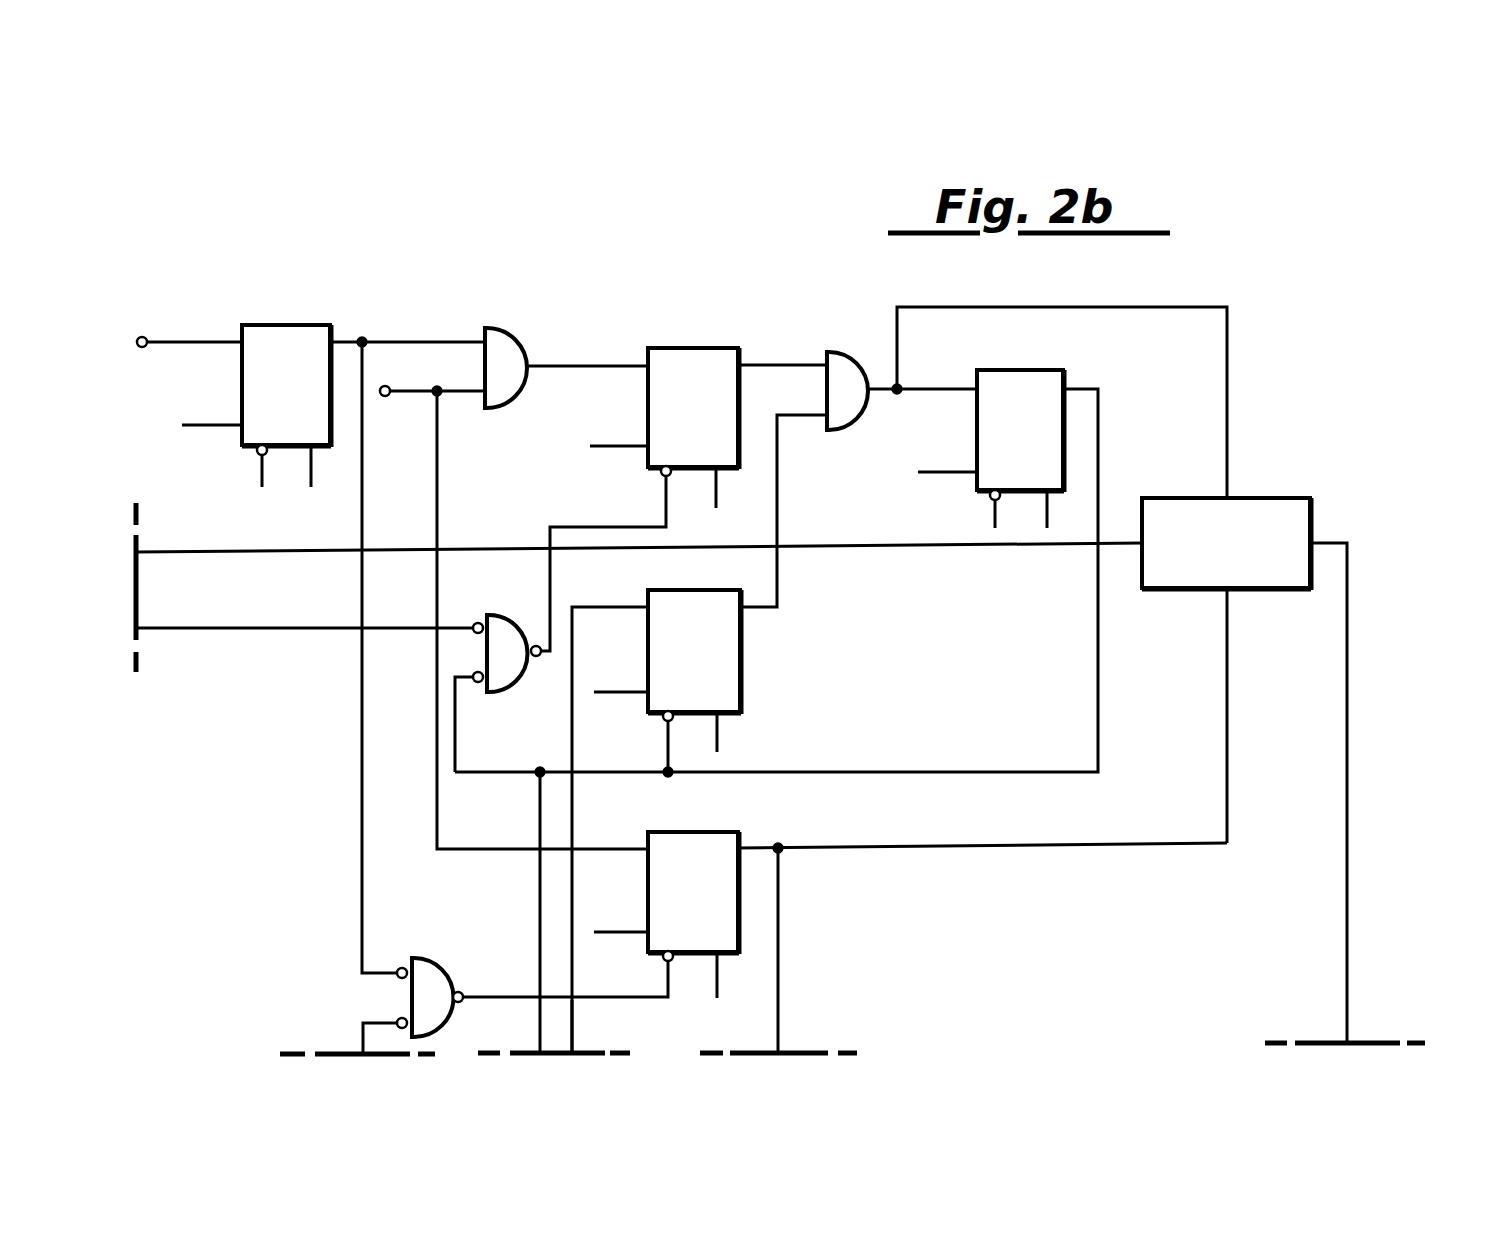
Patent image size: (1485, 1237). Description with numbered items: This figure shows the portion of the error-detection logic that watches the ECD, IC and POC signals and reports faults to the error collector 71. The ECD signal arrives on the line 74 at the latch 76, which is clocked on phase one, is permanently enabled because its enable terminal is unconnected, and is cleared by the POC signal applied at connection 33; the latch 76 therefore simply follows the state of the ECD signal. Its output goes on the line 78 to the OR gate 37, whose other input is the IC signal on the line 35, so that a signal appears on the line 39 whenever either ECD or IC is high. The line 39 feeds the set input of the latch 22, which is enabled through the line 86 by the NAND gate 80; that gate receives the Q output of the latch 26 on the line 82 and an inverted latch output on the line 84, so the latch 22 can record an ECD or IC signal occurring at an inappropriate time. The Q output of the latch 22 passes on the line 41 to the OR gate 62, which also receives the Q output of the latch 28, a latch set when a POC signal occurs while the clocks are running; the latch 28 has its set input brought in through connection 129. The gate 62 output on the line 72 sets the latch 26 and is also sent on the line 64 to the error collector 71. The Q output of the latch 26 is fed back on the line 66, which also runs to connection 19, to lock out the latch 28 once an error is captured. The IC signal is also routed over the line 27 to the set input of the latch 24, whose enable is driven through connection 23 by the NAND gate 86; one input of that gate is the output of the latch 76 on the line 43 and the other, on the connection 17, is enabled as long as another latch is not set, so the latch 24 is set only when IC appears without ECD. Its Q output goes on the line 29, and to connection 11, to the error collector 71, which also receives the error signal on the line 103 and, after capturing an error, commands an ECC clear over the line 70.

The latch 76 is at (265, 325).
The line 74 is at (205, 344).
The POC input line 33 is at (215, 427).
The line 78 is at (400, 342).
The line 43 is at (362, 790).
The line 35 is at (410, 393).
The line 27 is at (458, 849).
The OR gate 37 is at (520, 330).
The line 39 is at (583, 366).
The latch 22 is at (675, 348).
The NAND gate 86 is at (585, 527).
The flip-flop output line 41 is at (775, 365).
The OR gate 62 is at (855, 356).
The AND gate output line 72 is at (930, 389).
The line 64 is at (1227, 345).
The latch 26 is at (1000, 370).
The line 66 is at (1098, 425).
The error collector 71 is at (1275, 498).
The line 70 is at (1347, 1025).
The line 103 is at (165, 552).
The line 84 is at (168, 628).
The NAND gate 80 is at (518, 614).
The line 82 is at (455, 735).
The latch 28 is at (678, 590).
The ground connection 19 is at (540, 1038).
The ground connection 129 is at (572, 1038).
The latch 24 is at (680, 832).
The enable line 23 is at (640, 997).
The line 29 is at (905, 846).
The ground connection 11 is at (780, 1030).
The line 17 is at (360, 1033).